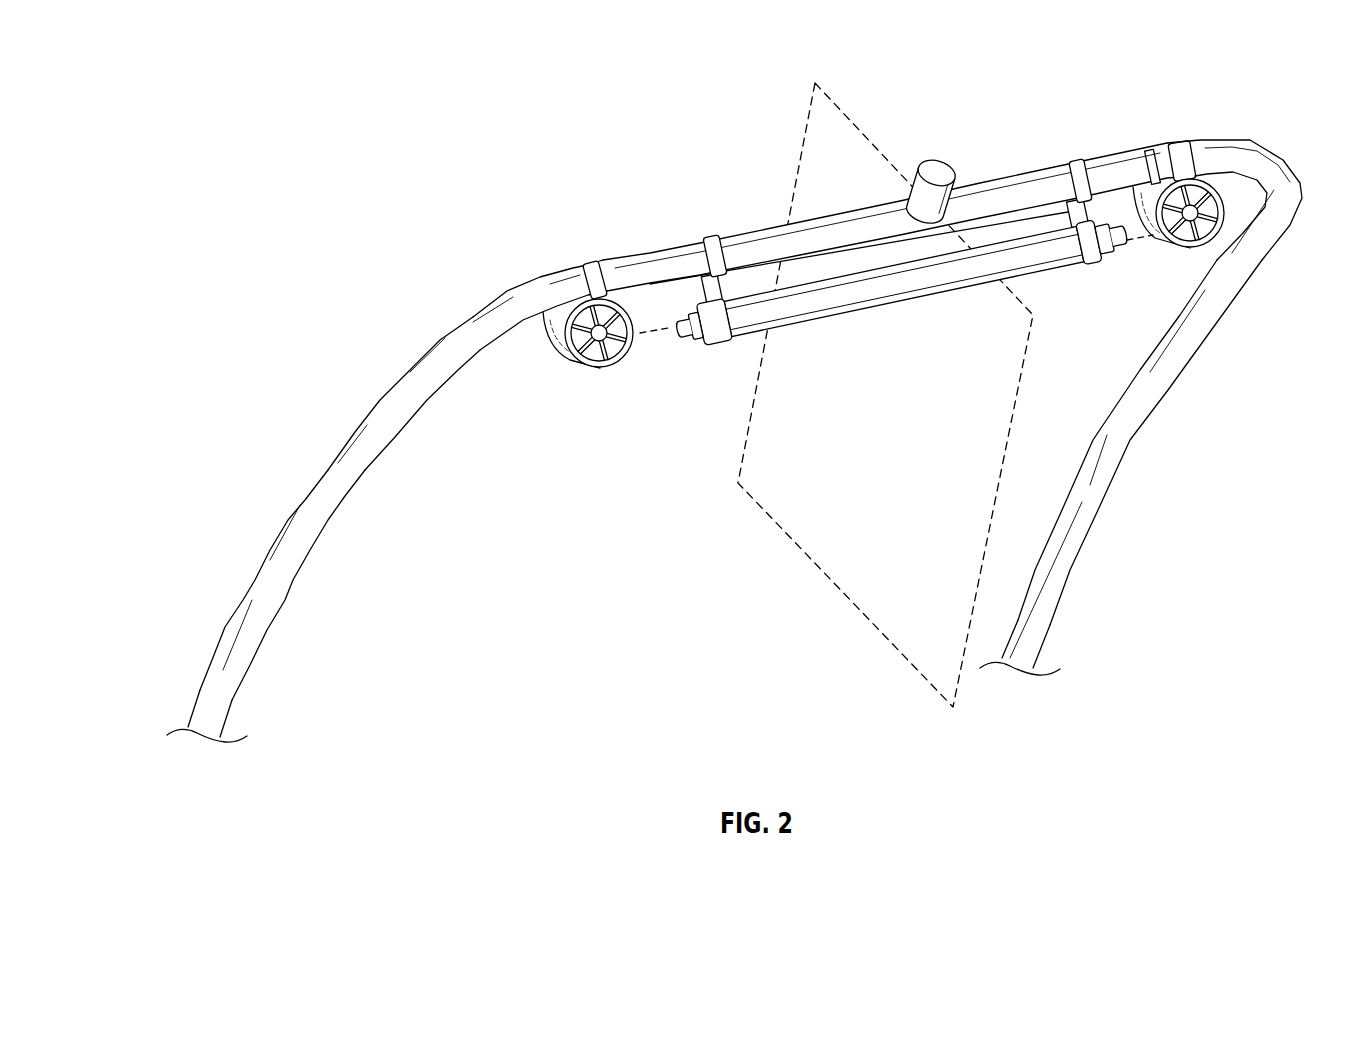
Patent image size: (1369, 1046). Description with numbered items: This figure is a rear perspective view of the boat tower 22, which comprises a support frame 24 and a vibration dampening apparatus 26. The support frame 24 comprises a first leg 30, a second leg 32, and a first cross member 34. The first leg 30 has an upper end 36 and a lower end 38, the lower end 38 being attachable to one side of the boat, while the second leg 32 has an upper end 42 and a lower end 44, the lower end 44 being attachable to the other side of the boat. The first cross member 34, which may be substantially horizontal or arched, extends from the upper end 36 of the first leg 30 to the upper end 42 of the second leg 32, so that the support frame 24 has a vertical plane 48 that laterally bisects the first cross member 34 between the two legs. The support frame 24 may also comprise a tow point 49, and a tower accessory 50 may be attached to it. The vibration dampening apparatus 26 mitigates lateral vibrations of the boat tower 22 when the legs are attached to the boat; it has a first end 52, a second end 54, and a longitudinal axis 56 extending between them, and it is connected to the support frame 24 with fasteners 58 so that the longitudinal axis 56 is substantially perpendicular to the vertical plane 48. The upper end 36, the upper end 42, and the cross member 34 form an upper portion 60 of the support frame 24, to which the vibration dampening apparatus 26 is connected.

The boat tower 22 is at (424, 152).
The support frame 24 is at (1162, 146).
The vibration dampening apparatus 26 is at (909, 317).
The first leg 30 is at (1130, 427).
The second leg 32 is at (302, 532).
The first cross member 34 is at (622, 257).
The upper end of the first leg 36 is at (1273, 227).
The lower end of the first leg 38 is at (1035, 625).
The upper end of the second leg 42 is at (475, 328).
The lower end of the second leg 44 is at (212, 705).
The vertical plane 48 is at (735, 468).
The tow point 49 is at (938, 172).
The tower accessory 50 is at (593, 368).
The first end 52 is at (715, 340).
The second end 54 is at (1103, 265).
The longitudinal axis 56 is at (667, 330).
The fastener 58 is at (713, 237).
The upper portion 60 is at (512, 298).